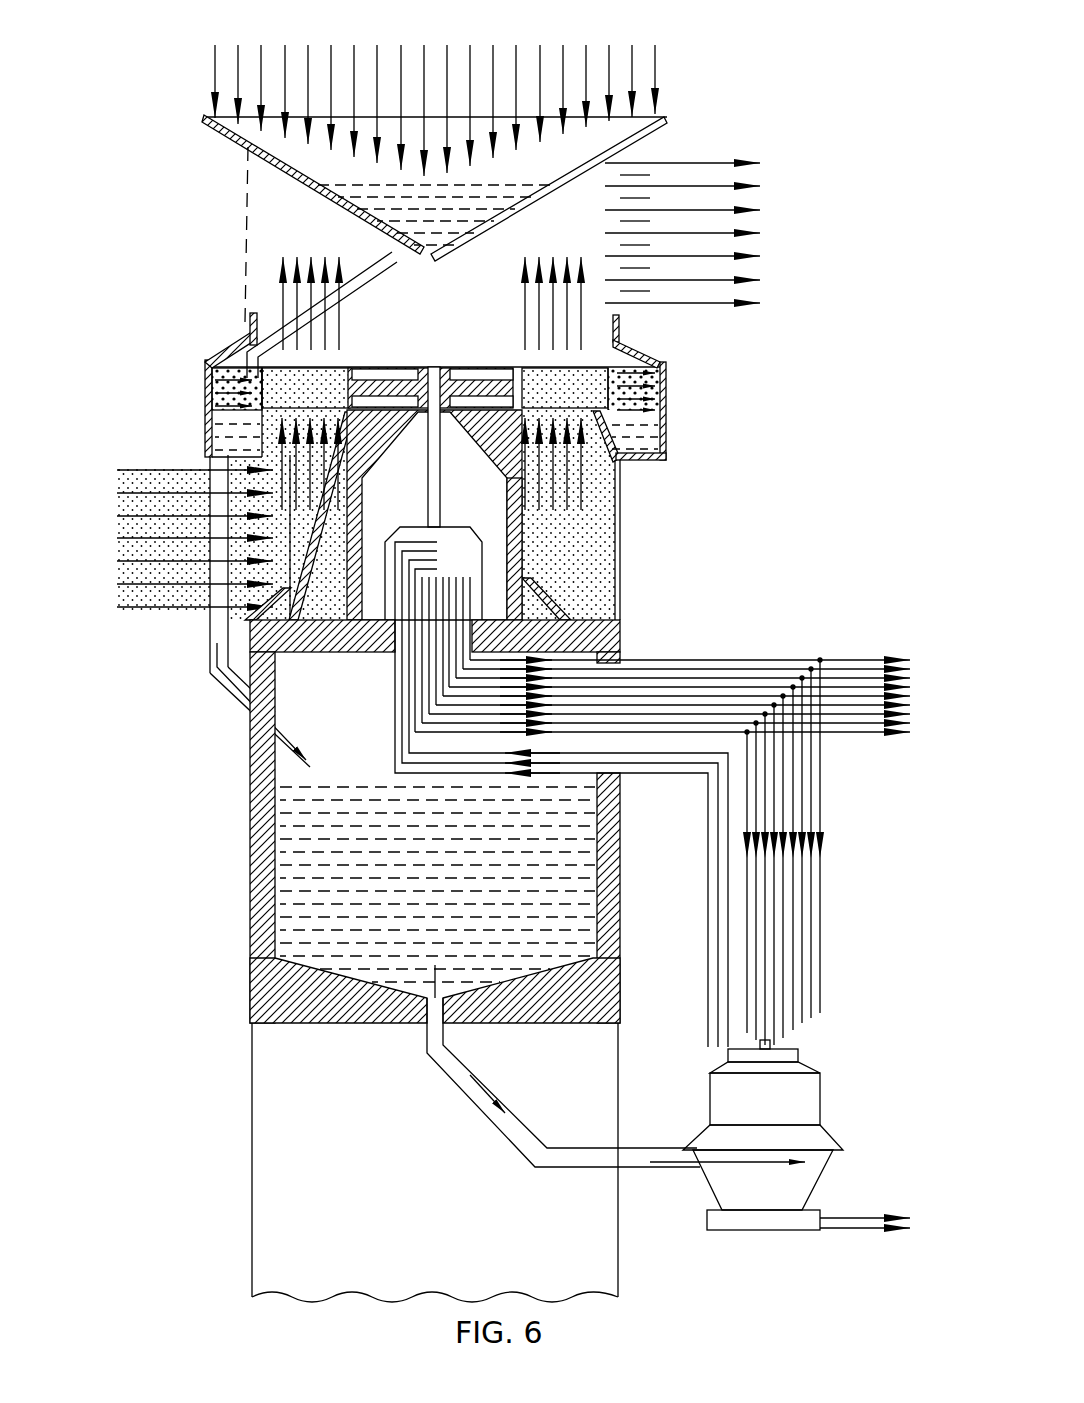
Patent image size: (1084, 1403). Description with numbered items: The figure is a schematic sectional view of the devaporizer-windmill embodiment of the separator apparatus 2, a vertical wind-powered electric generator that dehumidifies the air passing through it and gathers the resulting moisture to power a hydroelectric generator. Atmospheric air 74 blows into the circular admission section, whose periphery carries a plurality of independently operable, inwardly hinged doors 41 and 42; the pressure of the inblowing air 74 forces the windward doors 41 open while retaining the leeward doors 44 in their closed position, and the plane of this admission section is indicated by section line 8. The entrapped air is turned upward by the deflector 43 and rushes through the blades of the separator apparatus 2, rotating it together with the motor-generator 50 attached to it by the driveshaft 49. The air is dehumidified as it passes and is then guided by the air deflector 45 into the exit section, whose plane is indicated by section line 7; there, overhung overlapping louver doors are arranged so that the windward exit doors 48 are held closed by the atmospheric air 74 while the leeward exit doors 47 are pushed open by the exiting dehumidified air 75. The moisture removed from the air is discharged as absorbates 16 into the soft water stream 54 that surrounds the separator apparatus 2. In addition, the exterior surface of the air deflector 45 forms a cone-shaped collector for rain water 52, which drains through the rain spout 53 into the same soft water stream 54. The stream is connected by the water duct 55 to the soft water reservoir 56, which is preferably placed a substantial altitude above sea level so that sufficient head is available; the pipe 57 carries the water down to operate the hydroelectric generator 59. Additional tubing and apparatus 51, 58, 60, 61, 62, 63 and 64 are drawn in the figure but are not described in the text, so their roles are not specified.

The separator apparatus 2 is at (430, 359).
The section line 7 is at (83, 326).
The section line 8 is at (82, 566).
The absorbates 16 is at (664, 387).
The windward doors 41 is at (203, 627).
The doors 42 is at (621, 515).
The deflector 43 is at (621, 585).
The leeward doors 44 is at (657, 535).
The air deflector 45 is at (541, 211).
The leeward exit doors 47 is at (470, 182).
The windward exit doors 48 is at (194, 234).
The driveshaft 49 is at (434, 493).
The motor-generator 50 is at (441, 546).
The heat exchanger tubes 51 is at (705, 678).
The rain water 52 is at (476, 110).
The rain spout 53 is at (322, 294).
The soft water stream 54 is at (190, 385).
The water duct 55 is at (212, 705).
The soft water reservoir 56 is at (375, 821).
The pipe 57 is at (607, 1080).
The pump 58 is at (800, 1132).
The hydroelectric generator 59 is at (869, 1196).
The downcomer tubes 60 is at (832, 951).
The tube bundle 61 is at (666, 739).
The return tubes 62 is at (561, 833).
The chamber wall 63 is at (614, 549).
The lower housing 64 is at (374, 1162).
The atmospheric air 74 is at (421, 462).
The dehumidified air 75 is at (553, 230).